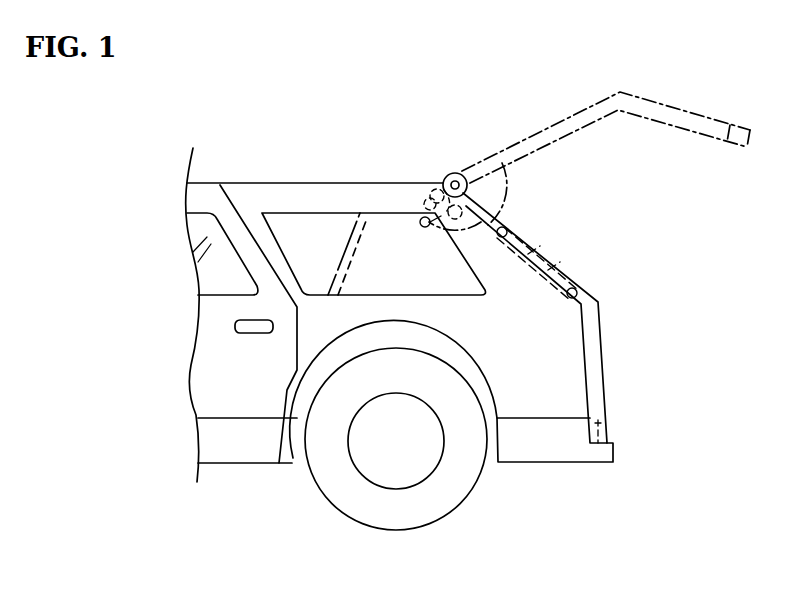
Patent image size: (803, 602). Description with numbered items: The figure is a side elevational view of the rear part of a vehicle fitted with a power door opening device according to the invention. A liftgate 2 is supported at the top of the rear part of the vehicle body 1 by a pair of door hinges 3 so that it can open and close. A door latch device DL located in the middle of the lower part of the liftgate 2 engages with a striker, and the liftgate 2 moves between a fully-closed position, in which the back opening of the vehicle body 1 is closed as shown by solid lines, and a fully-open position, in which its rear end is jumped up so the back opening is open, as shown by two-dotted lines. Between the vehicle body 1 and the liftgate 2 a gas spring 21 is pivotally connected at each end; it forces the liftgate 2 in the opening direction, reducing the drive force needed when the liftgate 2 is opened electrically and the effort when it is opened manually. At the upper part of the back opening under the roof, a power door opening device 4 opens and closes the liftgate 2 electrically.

The vehicle body 1 is at (335, 183).
The liftgate 2 is at (697, 134).
The gas spring 21 is at (528, 248).
The door hinges 3 is at (450, 174).
The power door opening device 4 is at (430, 180).
The door latch device DL is at (598, 420).